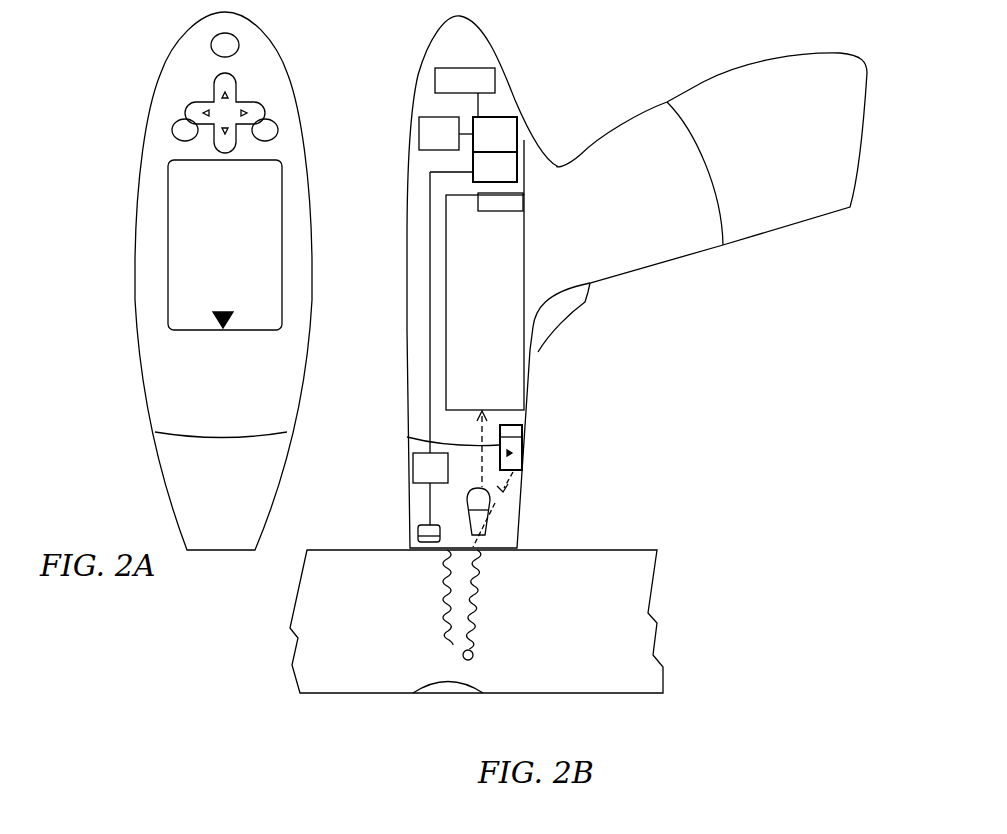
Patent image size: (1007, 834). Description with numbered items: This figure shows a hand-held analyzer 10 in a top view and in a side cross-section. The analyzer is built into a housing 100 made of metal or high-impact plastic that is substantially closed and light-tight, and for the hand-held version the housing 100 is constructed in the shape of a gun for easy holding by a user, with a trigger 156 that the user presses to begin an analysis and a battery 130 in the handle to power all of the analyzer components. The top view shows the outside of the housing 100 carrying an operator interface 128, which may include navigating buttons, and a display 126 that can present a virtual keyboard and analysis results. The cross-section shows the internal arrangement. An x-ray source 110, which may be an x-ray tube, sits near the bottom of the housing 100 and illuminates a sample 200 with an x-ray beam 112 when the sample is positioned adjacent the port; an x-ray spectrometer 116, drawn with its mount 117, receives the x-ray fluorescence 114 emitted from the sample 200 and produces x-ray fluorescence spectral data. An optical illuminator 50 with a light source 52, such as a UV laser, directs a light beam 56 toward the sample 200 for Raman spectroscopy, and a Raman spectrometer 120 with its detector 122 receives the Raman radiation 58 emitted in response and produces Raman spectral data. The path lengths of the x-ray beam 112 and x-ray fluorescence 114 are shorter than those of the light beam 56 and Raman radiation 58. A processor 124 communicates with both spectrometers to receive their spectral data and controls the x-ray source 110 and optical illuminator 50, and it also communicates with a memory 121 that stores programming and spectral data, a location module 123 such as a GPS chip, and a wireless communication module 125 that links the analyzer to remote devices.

In FIG. 2B, the analysis system 10 is at (618, 473).
In FIG. 2B, the optical illuminator 50 is at (512, 453).
In FIG. 2B, the light source 52 is at (517, 433).
In FIG. 2B, the light beam 56 is at (490, 510).
In FIG. 2B, the Raman radiation 58 is at (476, 432).
In FIG. 2A, the housing 100 is at (152, 389).
In FIG. 2B, the housing 100 is at (667, 266).
In FIG. 2B, the x-ray source 110 is at (483, 505).
In FIG. 2B, the x-ray beam 112 is at (483, 563).
In FIG. 2B, the x-ray fluorescence 114 is at (447, 558).
In FIG. 2B, the x-ray spectrometer 116 is at (418, 530).
In FIG. 2B, the sensor module 117 is at (413, 465).
In FIG. 2B, the Raman spectrometer 120 is at (501, 303).
In FIG. 2B, the memory 121 is at (454, 80).
In FIG. 2B, the detector 122 is at (523, 205).
In FIG. 2B, the location module 123 is at (422, 128).
In FIG. 2B, the processor 124 is at (507, 133).
In FIG. 2B, the wireless communication module 125 is at (508, 170).
In FIG. 2A, the display 126 is at (207, 330).
In FIG. 2A, the operator interface 128 is at (204, 102).
In FIG. 2B, the battery 130 is at (789, 226).
In FIG. 2B, the trigger 156 is at (552, 313).
In FIG. 2B, the sample 200 is at (618, 551).